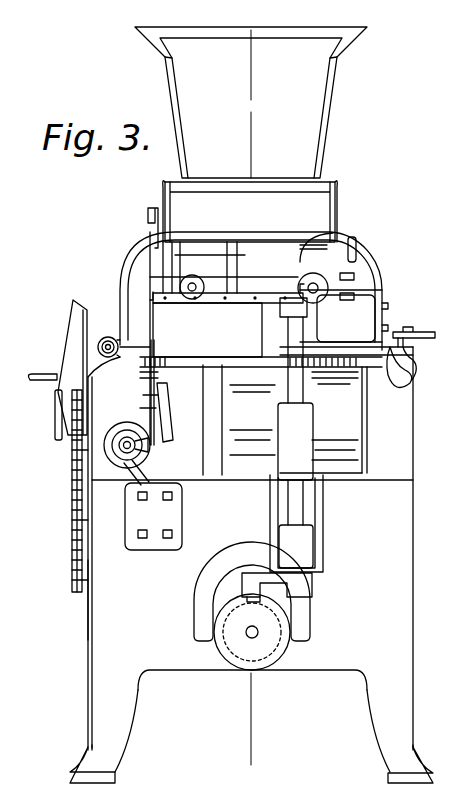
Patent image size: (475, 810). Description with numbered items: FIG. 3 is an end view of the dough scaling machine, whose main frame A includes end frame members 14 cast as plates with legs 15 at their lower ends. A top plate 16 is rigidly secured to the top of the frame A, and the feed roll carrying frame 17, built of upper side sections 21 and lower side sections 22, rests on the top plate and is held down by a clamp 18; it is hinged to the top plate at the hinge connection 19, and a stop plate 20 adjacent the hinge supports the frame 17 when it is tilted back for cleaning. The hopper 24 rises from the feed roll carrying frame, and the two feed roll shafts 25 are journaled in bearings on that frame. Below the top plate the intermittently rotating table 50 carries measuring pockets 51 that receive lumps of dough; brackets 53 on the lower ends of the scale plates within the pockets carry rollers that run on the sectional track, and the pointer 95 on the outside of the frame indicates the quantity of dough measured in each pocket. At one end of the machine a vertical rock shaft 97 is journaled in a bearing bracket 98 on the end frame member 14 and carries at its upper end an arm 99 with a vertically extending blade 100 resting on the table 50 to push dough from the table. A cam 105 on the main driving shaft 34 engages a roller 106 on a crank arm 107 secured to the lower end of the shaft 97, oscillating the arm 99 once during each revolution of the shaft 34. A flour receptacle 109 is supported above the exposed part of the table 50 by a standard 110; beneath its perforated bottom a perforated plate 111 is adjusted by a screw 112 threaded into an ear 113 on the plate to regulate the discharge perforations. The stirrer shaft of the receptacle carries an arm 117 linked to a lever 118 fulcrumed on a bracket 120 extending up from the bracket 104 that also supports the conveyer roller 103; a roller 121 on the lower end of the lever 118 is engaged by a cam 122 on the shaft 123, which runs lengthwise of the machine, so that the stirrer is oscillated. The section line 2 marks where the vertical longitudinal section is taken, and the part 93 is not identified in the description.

The section line 2 is at (269, 30).
The hopper 24 is at (330, 131).
The flour receptacle 109 is at (250, 211).
The upper side sections 21 is at (370, 251).
The arm 117 is at (152, 228).
The lever 118 is at (151, 311).
The standard 110 is at (235, 257).
The feed roll shafts 25 is at (192, 293).
The perforated plate 111 is at (334, 234).
The screw 112 is at (352, 240).
The ear 113 is at (356, 276).
The feed roll carrying frame 17 is at (378, 300).
The lower side sections 22 is at (367, 322).
The clamp 18 is at (423, 342).
The top plate 16 is at (412, 383).
The end frame members 14 is at (251, 565).
The legs 15 is at (252, 731).
The main frame A is at (88, 618).
The blade 100 is at (207, 330).
The arm 99 is at (248, 287).
The vertical rock shaft 97 is at (292, 370).
The bearing bracket 98 is at (287, 443).
The rotatory table 50 is at (348, 362).
The measuring pockets 51 is at (186, 392).
The stop plate 20 is at (74, 328).
The hinge connection 19 is at (98, 347).
The brackets 53 is at (28, 385).
The slide 93 is at (88, 438).
The pointer 95 is at (82, 483).
The cam 122 is at (121, 428).
The shaft 123 is at (124, 447).
The roller 103 is at (122, 462).
The bracket 104 is at (148, 512).
The roller 121 is at (147, 447).
The bracket 120 is at (167, 428).
The crank arm 107 is at (250, 572).
The roller 106 is at (233, 591).
The cam 105 is at (276, 656).
The main driving shaft 34 is at (250, 636).